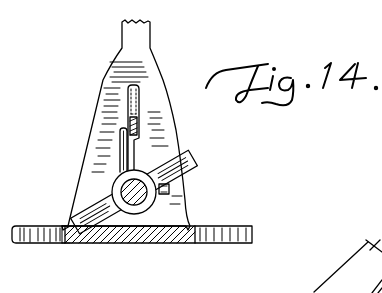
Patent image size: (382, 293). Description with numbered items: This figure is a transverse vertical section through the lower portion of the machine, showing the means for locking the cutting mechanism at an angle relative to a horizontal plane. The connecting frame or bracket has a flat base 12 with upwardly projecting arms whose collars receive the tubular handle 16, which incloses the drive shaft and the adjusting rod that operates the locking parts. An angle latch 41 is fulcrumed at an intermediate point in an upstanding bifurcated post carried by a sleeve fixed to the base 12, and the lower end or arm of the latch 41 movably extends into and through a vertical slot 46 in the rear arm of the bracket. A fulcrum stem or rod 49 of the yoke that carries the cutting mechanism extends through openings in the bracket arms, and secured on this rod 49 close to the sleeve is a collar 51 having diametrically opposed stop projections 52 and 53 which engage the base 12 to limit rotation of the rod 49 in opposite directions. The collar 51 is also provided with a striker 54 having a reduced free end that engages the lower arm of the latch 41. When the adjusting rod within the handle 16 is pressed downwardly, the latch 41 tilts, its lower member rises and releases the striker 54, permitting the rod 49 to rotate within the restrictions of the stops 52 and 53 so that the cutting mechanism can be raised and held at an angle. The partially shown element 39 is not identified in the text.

The flat base 12 is at (77, 244).
The tubular handle 16 is at (368, 230).
The arm 39 is at (369, 266).
The angle latch 41 is at (133, 125).
The vertical slot 46 is at (133, 113).
The fulcrum stem or rod 49 is at (139, 199).
The collar 51 is at (116, 185).
The stop projection 52 is at (186, 179).
The stop projection 53 is at (102, 228).
The striker 54 is at (122, 151).